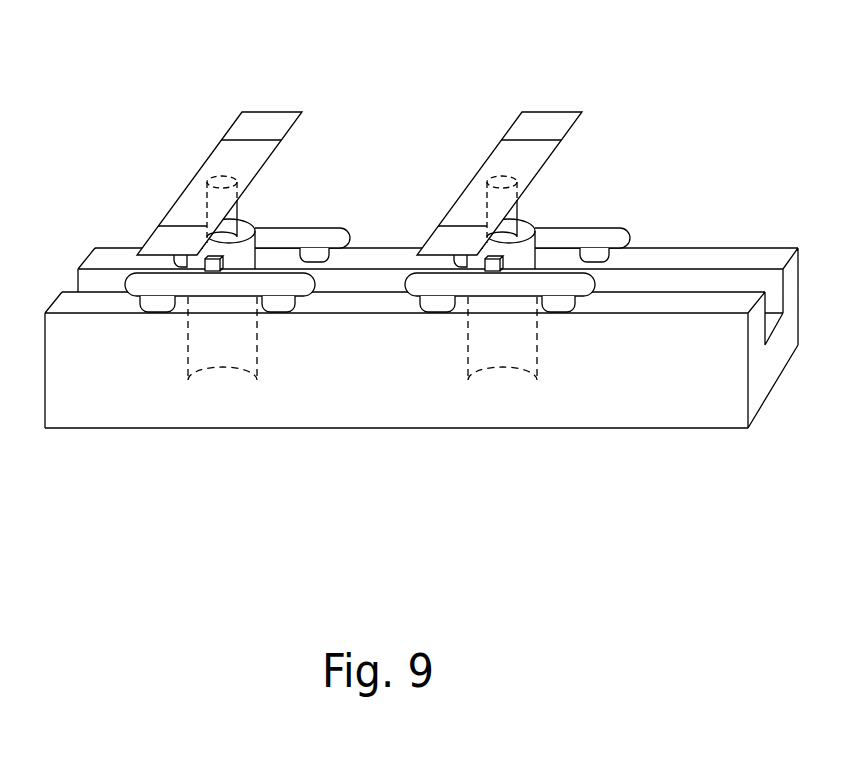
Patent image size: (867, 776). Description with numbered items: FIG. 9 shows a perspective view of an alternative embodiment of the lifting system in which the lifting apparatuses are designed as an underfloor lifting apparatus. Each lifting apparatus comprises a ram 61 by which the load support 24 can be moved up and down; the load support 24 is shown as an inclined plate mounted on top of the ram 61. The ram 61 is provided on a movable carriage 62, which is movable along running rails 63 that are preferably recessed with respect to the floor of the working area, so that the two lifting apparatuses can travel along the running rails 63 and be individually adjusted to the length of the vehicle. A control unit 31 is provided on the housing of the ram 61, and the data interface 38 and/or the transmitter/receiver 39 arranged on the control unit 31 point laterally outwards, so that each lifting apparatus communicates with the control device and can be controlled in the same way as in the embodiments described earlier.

The load support 24 is at (263, 100).
The control unit 31 is at (224, 262).
The data interface 38 is at (312, 364).
The transmitter/receiver 39 is at (207, 270).
The ram 61 is at (257, 213).
The movable carriage 62 is at (332, 220).
The running rails 63 is at (693, 307).